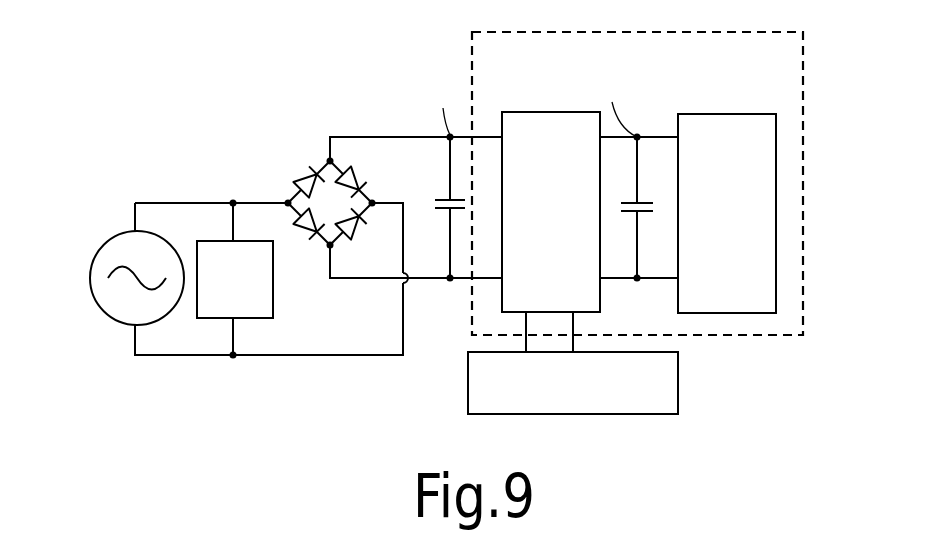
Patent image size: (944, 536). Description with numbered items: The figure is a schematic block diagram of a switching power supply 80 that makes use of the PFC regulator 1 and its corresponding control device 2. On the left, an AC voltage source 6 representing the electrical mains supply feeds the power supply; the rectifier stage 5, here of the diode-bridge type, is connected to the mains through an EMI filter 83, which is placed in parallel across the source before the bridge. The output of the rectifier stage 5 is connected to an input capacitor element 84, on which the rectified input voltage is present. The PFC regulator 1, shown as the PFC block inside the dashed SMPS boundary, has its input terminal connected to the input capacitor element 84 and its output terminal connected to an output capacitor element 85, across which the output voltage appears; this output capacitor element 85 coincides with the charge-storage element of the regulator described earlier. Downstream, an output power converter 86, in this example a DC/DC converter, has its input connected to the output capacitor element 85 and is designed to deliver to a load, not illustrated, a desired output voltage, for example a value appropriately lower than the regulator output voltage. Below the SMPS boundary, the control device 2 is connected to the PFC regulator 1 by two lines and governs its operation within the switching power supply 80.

The switching power supply 80 is at (212, 106).
The AC voltage source 6 is at (171, 203).
The EMI filter 83 is at (273, 296).
The rectifier stage 5 is at (284, 195).
The input capacitor element 84 is at (439, 209).
The PFC regulator 1 is at (546, 126).
The output capacitor element 85 is at (628, 212).
The output power converter 86 is at (729, 113).
The control device 2 is at (678, 402).